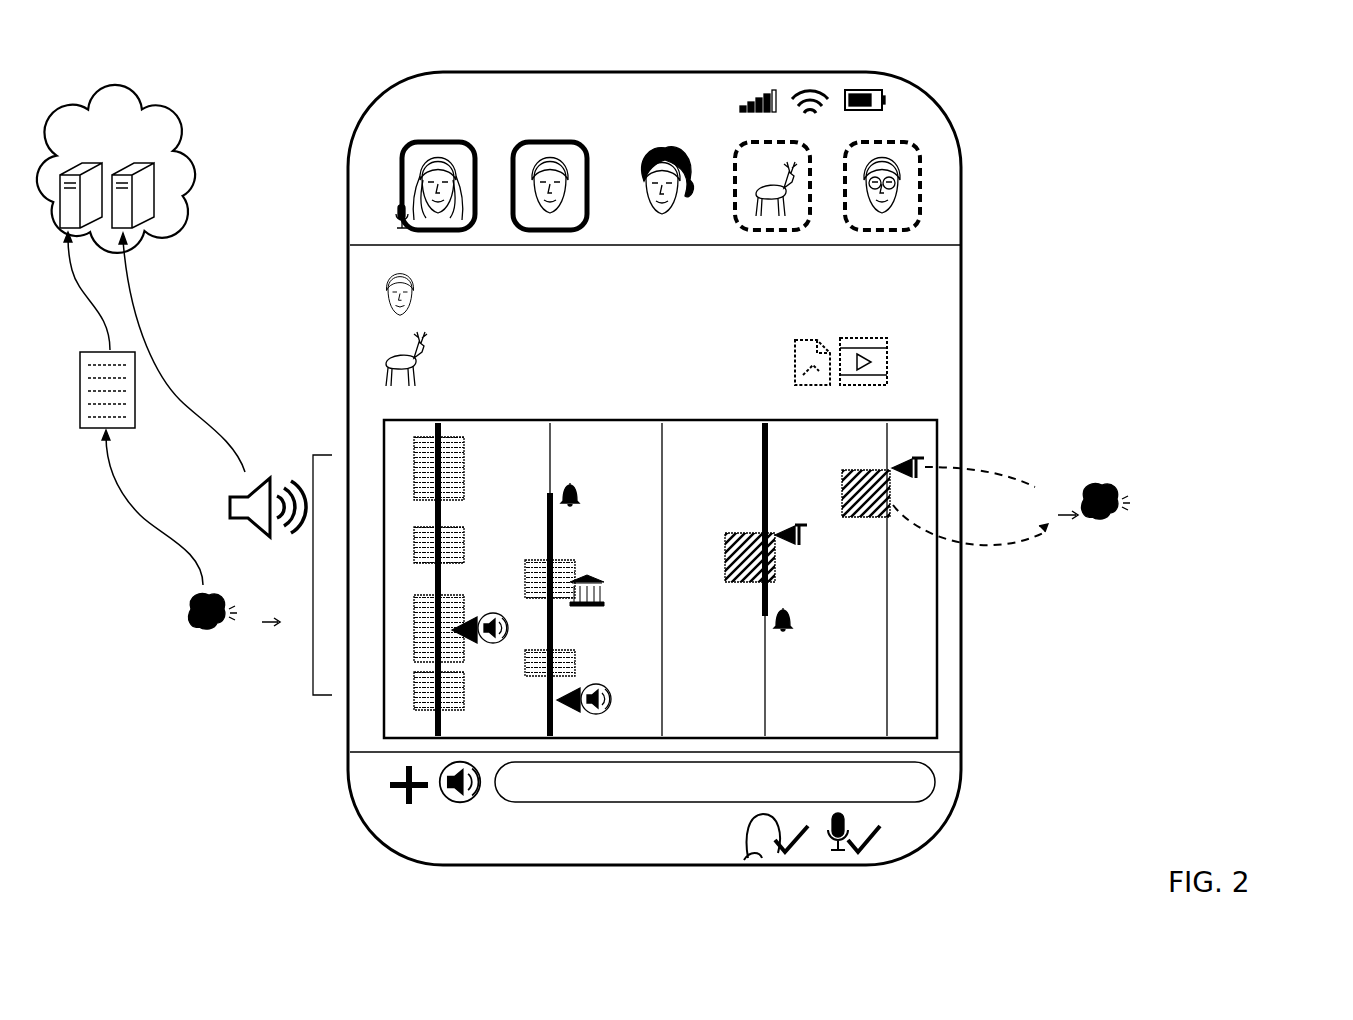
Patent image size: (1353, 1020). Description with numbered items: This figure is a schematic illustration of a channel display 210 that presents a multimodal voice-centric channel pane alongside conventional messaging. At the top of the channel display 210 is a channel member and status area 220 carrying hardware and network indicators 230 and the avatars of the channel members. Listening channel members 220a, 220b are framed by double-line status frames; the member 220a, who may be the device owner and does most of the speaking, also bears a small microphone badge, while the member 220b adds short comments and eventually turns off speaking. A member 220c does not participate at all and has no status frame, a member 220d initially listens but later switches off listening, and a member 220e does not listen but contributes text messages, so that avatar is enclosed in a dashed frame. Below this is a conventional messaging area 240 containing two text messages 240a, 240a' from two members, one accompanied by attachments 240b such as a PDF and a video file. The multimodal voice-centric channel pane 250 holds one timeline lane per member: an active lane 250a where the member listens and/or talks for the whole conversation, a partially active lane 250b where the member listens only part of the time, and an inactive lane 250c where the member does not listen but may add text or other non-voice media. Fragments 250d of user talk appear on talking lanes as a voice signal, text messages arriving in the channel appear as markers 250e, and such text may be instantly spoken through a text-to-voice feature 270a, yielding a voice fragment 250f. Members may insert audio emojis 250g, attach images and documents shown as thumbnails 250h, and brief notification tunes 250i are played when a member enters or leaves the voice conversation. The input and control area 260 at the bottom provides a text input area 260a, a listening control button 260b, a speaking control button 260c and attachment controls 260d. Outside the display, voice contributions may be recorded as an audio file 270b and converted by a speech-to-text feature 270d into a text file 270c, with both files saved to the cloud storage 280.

The channel display 210 is at (963, 212).
The channel member and status area 220 is at (563, 120).
The listening channel member 220a is at (403, 175).
The listening channel member 220b is at (513, 155).
The channel member 220c is at (662, 150).
The channel member 220d is at (737, 150).
The channel member 220e is at (921, 176).
The hardware and network indicators 230 is at (888, 102).
The conventional messaging area 240 is at (926, 275).
The text message 240a is at (587, 279).
The text message 240a' is at (524, 344).
The attachments 240b is at (890, 358).
The multimodal voice-centric channel pane 250 is at (716, 458).
The active lane 250a is at (433, 512).
The partially active lane 250b is at (770, 440).
The inactive lane 250c is at (888, 593).
The fragments of user talk 250d is at (414, 647).
The markers 250e is at (912, 464).
The voice fragment 250f is at (888, 508).
The audio emojis 250g is at (612, 700).
The thumbnails 250h is at (587, 590).
The notification tunes 250i is at (795, 624).
The input and control area 260 is at (616, 835).
The text input area 260a is at (938, 783).
The listening control button 260b is at (740, 853).
The speaking control button 260c is at (885, 840).
The attachment controls 260d is at (388, 787).
The text-to-voice feature 270a is at (1122, 498).
The audio file 270b is at (246, 480).
The text file 270c is at (92, 430).
The speech-to-text feature 270d is at (190, 612).
The cloud storage 280 is at (127, 145).